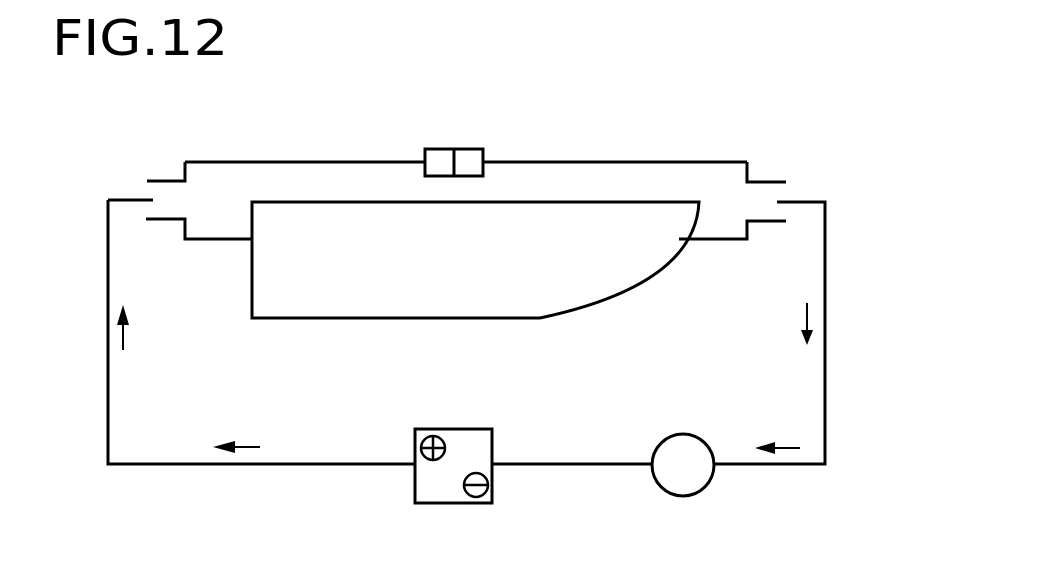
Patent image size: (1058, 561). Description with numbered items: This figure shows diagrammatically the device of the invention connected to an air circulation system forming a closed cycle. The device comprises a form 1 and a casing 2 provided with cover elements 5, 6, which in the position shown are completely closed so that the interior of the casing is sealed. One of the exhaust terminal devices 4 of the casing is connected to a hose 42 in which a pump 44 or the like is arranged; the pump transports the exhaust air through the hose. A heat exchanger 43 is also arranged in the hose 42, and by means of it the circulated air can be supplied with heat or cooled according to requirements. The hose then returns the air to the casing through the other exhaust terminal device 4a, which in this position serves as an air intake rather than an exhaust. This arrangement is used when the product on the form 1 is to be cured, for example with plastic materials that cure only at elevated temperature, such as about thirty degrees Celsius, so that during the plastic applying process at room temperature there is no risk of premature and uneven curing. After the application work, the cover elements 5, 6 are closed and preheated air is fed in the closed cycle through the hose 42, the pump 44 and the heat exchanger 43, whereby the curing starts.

The form 1 is at (313, 250).
The casing 2 is at (224, 222).
The exhaust terminal device 4a is at (162, 195).
The exhaust terminal device 4 is at (758, 190).
The cover element 5 is at (345, 162).
The cover element 6 is at (608, 162).
The hose 42 is at (825, 358).
The heat exchanger 43 is at (488, 472).
The pump 44 is at (685, 477).